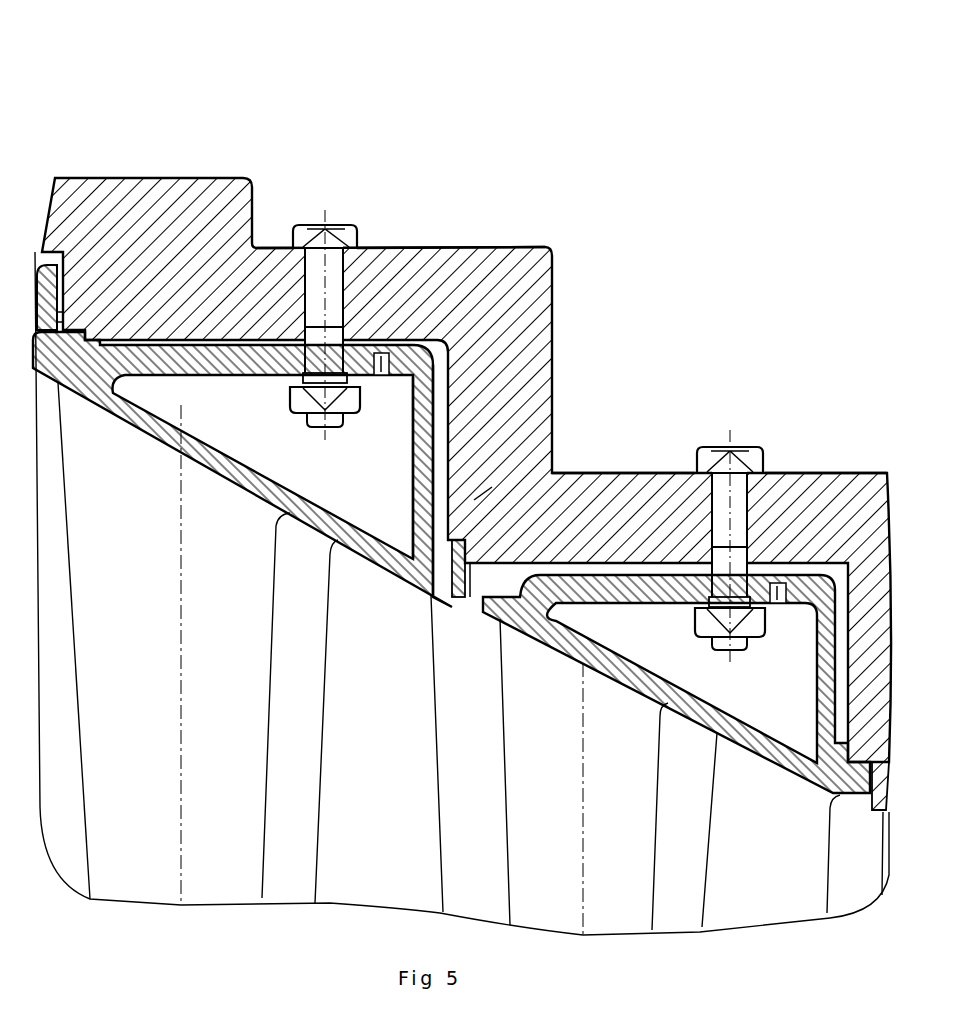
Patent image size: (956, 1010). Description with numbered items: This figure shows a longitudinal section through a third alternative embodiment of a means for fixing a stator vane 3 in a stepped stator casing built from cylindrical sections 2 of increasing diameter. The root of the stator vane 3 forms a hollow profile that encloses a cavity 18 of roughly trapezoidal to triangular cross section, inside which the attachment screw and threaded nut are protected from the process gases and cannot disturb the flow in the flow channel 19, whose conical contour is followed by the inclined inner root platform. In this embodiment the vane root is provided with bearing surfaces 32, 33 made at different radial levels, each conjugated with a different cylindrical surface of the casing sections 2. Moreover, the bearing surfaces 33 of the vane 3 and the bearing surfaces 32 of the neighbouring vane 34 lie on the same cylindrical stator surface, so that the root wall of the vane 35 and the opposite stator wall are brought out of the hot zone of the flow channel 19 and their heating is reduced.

The cylindrical section 2 is at (584, 548).
The stator vane 3 is at (462, 473).
The cavity 18 is at (304, 309).
The flow channel 19 is at (298, 675).
The bearing surface 32 is at (95, 333).
The bearing surface 33 is at (462, 548).
The vane 34 is at (562, 760).
The vane 35 is at (419, 447).